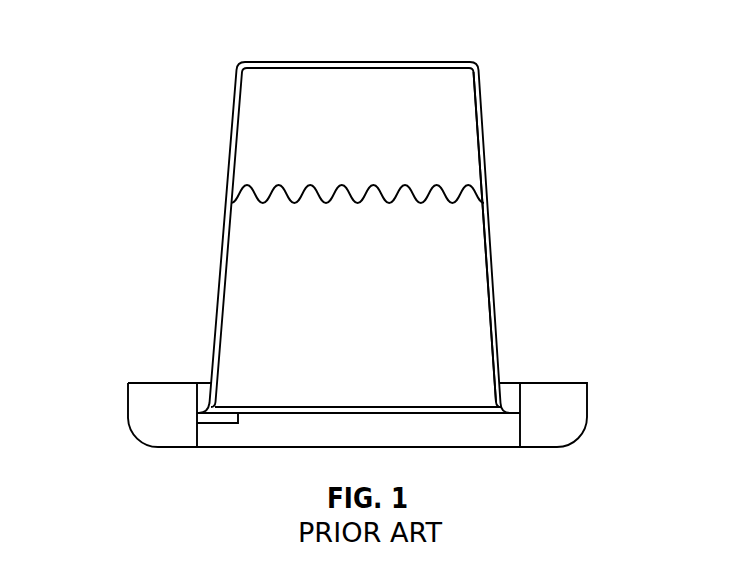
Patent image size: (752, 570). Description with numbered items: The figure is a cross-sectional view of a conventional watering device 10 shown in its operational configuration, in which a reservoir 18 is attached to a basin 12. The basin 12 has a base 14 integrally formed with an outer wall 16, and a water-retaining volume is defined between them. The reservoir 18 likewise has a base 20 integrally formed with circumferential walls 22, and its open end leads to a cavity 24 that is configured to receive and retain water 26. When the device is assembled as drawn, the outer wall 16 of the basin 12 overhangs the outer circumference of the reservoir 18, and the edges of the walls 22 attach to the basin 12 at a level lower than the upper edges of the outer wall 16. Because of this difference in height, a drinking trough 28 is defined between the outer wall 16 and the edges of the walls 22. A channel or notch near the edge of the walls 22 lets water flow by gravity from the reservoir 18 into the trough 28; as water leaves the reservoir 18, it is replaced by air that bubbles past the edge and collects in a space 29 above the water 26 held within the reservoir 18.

The watering device 10 is at (76, 106).
The basin 12 is at (128, 397).
The base 14 is at (553, 445).
The outer wall 16 is at (587, 381).
The reservoir 18 is at (482, 152).
The base 20 is at (393, 62).
The circumferential walls 22 is at (230, 222).
The cavity 24 is at (455, 122).
The water 26 is at (427, 252).
The drinking trough 28 is at (557, 398).
The space 29 is at (323, 88).